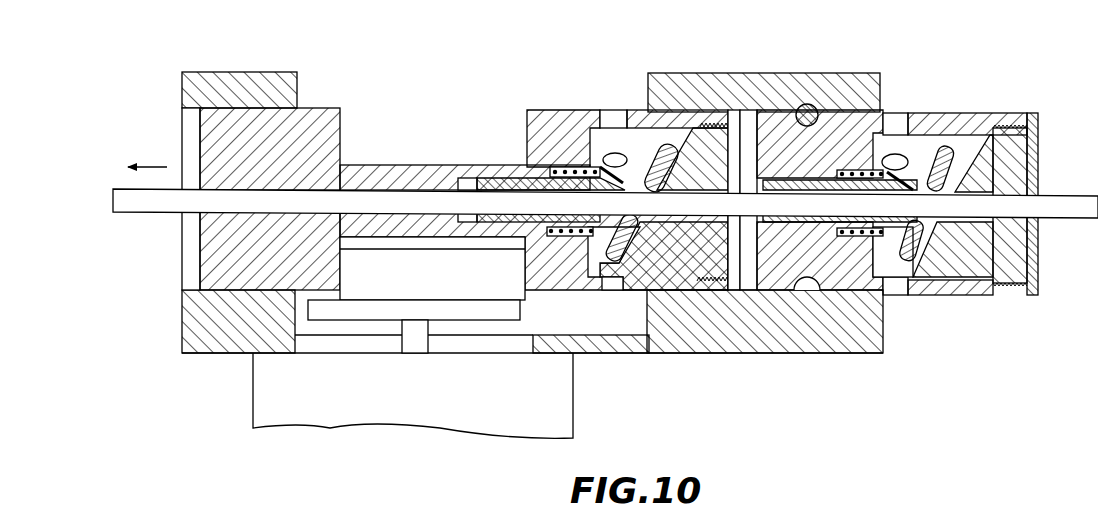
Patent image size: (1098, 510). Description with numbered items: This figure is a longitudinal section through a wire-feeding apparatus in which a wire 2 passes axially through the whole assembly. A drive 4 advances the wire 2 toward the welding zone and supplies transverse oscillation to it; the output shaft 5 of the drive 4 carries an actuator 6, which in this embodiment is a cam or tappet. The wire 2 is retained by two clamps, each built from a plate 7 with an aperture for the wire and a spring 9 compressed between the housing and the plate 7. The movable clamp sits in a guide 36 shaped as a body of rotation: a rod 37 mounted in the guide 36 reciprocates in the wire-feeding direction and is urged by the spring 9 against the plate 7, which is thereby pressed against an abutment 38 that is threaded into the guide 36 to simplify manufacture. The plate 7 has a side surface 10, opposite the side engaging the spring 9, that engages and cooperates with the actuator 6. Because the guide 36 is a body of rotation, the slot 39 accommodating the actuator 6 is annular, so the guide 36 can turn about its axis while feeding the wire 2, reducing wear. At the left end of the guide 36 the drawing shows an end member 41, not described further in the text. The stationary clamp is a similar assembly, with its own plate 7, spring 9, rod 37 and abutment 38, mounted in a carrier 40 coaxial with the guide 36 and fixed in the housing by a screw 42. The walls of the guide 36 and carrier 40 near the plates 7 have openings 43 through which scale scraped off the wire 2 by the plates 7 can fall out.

The wire 2 is at (1065, 205).
The drive 4 is at (463, 418).
The output shaft 5 is at (417, 345).
The actuator 6 is at (355, 290).
The plate 7 is at (675, 143).
The spring 9 is at (542, 163).
The side surface 10 is at (658, 147).
The guide 36 is at (317, 120).
The rod 37 is at (597, 167).
The abutment 38 is at (710, 127).
The slot 39 is at (364, 160).
The carrier 40 is at (777, 281).
The flange 41 is at (195, 82).
The screw 42 is at (803, 104).
The openings 43 is at (614, 283).